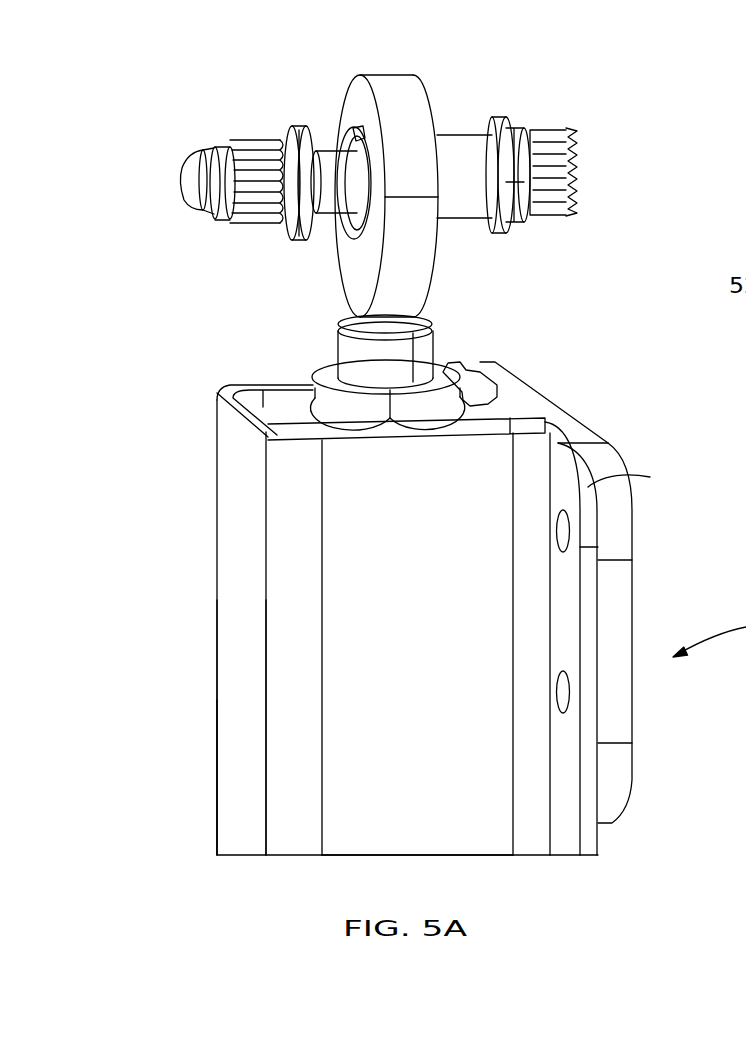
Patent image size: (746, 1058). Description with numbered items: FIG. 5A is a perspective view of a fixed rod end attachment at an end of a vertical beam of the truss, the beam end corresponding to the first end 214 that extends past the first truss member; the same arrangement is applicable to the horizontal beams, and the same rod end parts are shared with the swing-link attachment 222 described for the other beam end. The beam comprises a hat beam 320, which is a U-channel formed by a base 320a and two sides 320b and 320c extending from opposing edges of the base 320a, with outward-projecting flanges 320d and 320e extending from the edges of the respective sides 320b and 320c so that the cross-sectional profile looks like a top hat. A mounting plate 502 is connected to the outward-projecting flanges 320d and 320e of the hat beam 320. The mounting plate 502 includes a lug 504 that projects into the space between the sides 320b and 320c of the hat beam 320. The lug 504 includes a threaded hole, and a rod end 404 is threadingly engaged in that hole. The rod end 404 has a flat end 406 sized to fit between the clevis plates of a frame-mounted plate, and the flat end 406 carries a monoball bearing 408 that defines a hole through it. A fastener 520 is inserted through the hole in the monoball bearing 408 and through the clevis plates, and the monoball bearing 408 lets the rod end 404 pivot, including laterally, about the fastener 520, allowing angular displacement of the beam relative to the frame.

The first end 214 is at (195, 390).
The swing-link attachment 222 is at (560, 80).
The hat beam 320 is at (422, 621).
The base 320a is at (245, 722).
The side 320b is at (290, 403).
The side 320c is at (475, 825).
The outward-projecting flange 320d is at (465, 367).
The outward-projecting flange 320e is at (588, 487).
The rod end 404 is at (427, 348).
The flat end 406 is at (355, 265).
The monoball bearing 408 is at (357, 130).
The mounting plate 502 is at (580, 422).
The lug 504 is at (518, 393).
The fastener 520 is at (585, 138).